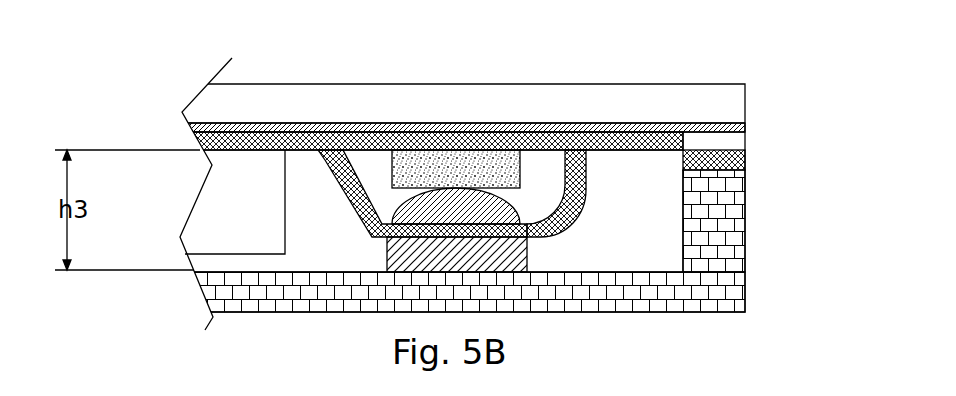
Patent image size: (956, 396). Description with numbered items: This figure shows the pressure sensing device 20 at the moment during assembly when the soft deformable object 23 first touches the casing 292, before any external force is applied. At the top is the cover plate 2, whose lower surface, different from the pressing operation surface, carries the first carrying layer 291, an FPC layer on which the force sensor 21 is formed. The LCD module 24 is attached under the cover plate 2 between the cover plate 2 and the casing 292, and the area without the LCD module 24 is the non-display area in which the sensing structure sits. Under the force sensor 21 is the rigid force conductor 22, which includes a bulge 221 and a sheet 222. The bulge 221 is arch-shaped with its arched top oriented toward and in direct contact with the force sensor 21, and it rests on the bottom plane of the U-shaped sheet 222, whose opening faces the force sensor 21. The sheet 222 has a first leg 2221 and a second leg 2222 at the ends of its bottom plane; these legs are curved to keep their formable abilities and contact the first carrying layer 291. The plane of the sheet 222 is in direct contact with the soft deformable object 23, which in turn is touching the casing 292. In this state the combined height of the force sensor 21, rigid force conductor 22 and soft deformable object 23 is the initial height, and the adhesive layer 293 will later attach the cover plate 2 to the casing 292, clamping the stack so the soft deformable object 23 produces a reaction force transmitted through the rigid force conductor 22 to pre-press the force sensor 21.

The pressure sensing device 20 is at (452, 42).
The cover plate 2 is at (496, 124).
The force sensor 21 is at (700, 128).
The first carrying layer 291 is at (688, 141).
The adhesive layer 293 is at (747, 160).
The casing 292 is at (748, 192).
The LCD module 24 is at (213, 163).
The rigid force conductor 22 is at (443, 193).
The first leg 2221 is at (318, 153).
The second leg 2222 is at (588, 152).
The bulge 221 is at (520, 212).
The sheet 222 is at (550, 230).
The soft deformable object 23 is at (530, 256).